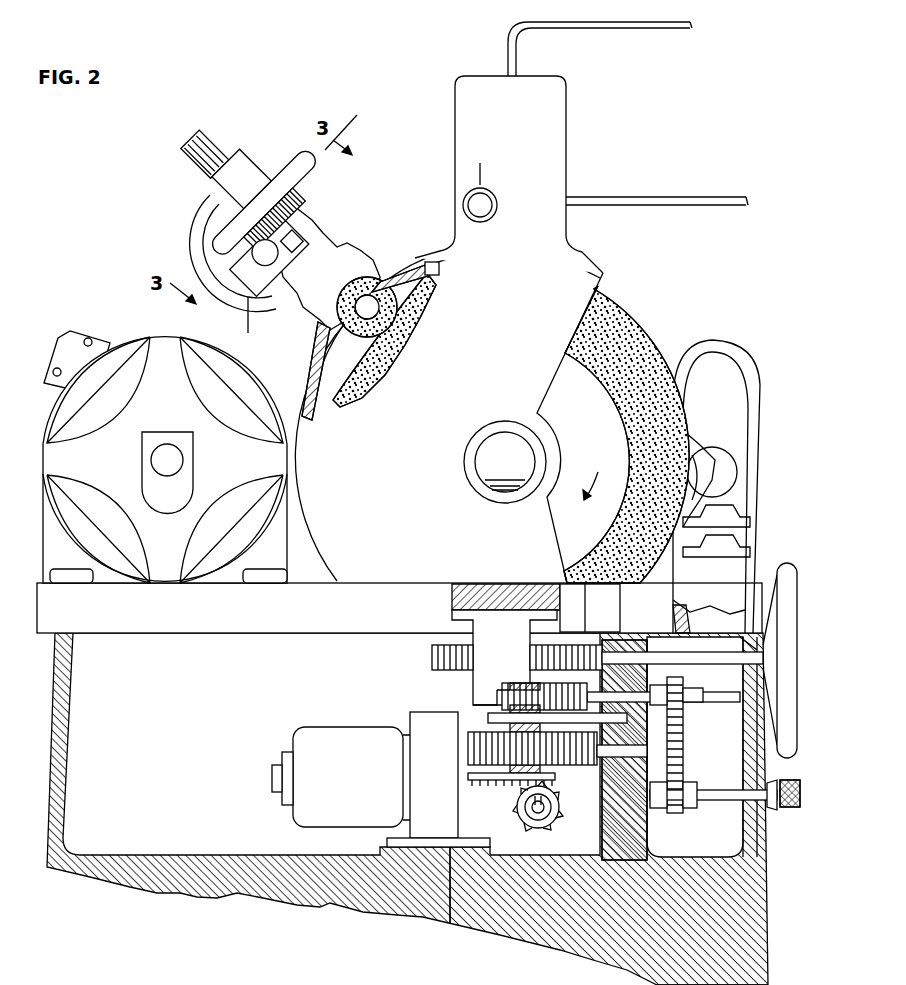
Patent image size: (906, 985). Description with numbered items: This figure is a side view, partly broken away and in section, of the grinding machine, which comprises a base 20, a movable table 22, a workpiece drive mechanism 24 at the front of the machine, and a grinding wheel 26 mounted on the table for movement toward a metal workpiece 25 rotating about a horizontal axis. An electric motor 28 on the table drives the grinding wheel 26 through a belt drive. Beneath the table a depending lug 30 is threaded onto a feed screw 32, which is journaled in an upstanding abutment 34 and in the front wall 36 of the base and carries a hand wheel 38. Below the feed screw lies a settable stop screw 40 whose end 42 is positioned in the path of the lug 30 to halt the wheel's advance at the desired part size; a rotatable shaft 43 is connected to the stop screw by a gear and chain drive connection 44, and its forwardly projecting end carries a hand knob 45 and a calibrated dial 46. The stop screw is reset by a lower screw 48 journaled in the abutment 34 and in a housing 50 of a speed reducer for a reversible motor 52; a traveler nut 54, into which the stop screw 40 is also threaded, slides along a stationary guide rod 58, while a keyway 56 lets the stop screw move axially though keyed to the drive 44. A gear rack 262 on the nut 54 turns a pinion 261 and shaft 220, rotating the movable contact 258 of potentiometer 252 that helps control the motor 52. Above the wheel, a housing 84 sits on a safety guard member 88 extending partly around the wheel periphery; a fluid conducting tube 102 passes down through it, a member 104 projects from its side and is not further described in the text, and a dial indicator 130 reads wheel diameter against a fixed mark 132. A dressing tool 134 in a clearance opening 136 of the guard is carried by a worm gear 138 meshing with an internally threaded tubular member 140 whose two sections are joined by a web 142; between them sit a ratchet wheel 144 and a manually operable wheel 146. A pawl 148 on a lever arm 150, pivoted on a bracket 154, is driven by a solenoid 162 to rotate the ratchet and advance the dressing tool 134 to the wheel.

The base 20 is at (752, 915).
The movable table 22 is at (268, 612).
The workpiece drive mechanism 24 is at (757, 493).
The metal workpiece 25 is at (717, 475).
The grinding wheel 26 is at (625, 332).
The electric motor 28 is at (112, 338).
The depending lug 30 is at (520, 610).
The feed screw 32 is at (428, 655).
The upstanding abutment 34 is at (625, 650).
The front wall 36 is at (757, 727).
The hand wheel 38 is at (793, 662).
The settable stop screw 40 is at (520, 660).
The end of stop screw 42 is at (497, 690).
The rotatable shaft 43 is at (718, 800).
The gear and chain drive connection 44 is at (688, 757).
The hand knob 45 is at (790, 807).
The dial 46 is at (774, 810).
The resetting feed screw 48 is at (470, 748).
The housing 50 is at (412, 712).
The reversible electric drive motor 52 is at (335, 738).
The traveler nut 54 is at (550, 695).
The keyway 56 is at (655, 662).
The stationary guide rod 58 is at (490, 718).
The housing 84 is at (566, 137).
The safety guard member 88 is at (607, 275).
The fluid conducting tube 102 is at (618, 22).
The rod 104 is at (655, 192).
The dial indicator 130 is at (463, 203).
The fixed mark 132 is at (478, 186).
The dressing tool 134 is at (383, 297).
The clearance opening 136 is at (320, 340).
The worm gear 138 is at (205, 154).
The internally threaded tubular member 140 is at (312, 215).
The web 142 is at (190, 232).
The ratchet wheel 144 is at (275, 219).
The manually operable wheel 146 is at (263, 202).
The pawl 148 is at (213, 297).
The lever arm 150 is at (260, 327).
The bracket 154 is at (269, 256).
The solenoid 162 is at (265, 252).
The shaft 220 is at (530, 820).
The potentiometer 252 is at (522, 811).
The movable contact 258 is at (548, 802).
The pinion 261 is at (522, 793).
The gear rack 262 is at (472, 778).